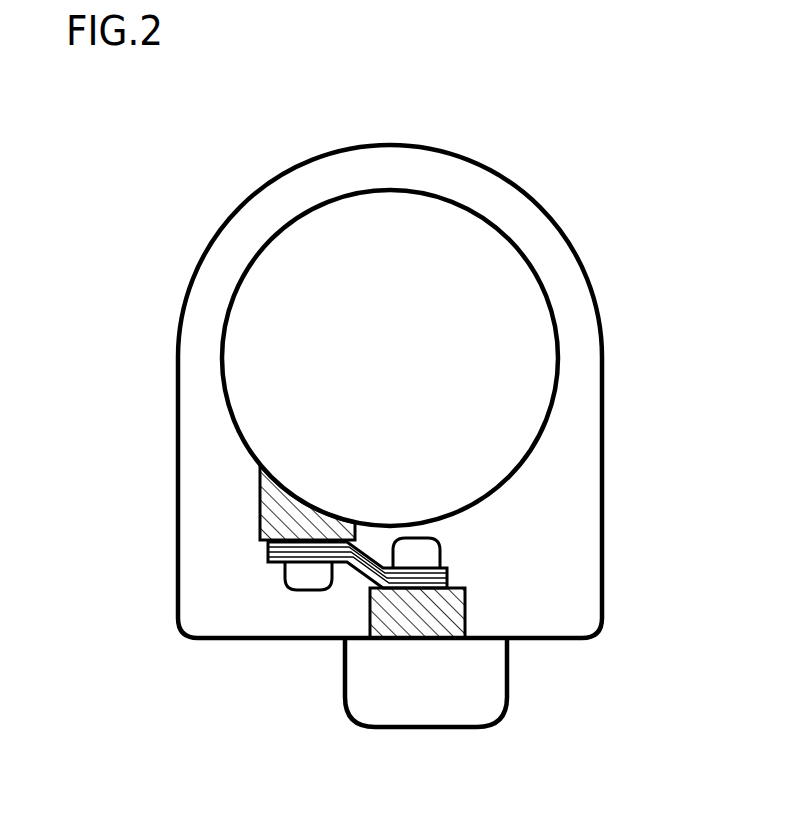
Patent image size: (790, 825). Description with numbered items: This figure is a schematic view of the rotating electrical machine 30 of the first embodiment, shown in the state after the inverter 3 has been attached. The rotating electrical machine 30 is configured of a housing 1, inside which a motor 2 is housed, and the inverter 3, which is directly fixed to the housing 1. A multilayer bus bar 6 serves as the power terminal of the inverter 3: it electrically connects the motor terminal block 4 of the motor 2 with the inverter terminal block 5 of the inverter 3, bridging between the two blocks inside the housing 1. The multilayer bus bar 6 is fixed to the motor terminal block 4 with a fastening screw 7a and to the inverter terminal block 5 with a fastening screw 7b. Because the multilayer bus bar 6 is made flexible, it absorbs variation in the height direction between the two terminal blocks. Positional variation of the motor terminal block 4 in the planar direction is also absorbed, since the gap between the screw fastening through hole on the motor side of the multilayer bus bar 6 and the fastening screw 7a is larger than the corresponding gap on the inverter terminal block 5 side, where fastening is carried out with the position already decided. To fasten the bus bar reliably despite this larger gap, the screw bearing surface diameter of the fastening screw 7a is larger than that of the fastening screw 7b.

The rotating electrical machine 30 is at (526, 177).
The housing 1 is at (570, 245).
The motor 2 is at (462, 360).
The inverter 3 is at (493, 683).
The motor terminal block 4 is at (265, 500).
The inverter terminal block 5 is at (450, 612).
The multilayer bus bar 6 is at (268, 553).
The fastening screw 7a is at (303, 577).
The fastening screw 7b is at (427, 558).